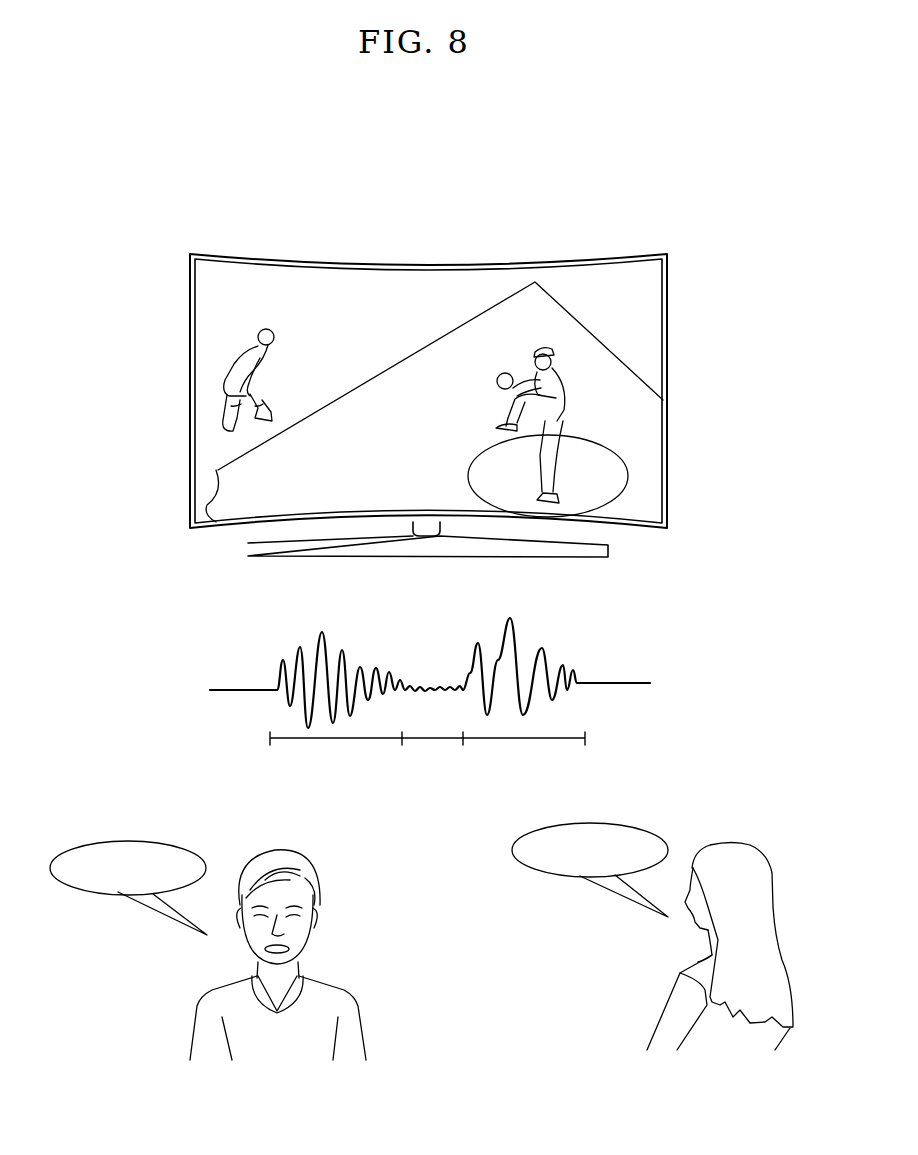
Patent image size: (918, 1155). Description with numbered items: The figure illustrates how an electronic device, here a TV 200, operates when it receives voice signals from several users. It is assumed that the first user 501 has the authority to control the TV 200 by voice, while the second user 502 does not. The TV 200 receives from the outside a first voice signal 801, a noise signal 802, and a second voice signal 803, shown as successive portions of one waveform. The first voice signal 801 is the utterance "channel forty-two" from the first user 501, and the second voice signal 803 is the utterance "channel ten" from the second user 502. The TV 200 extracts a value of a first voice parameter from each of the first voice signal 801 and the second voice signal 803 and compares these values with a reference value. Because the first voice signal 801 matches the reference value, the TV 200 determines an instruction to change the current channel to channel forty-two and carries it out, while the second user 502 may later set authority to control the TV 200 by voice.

The TV 200 is at (430, 261).
The first voice signal 801 is at (402, 742).
The noise signal 802 is at (463, 742).
The second voice signal 803 is at (585, 742).
The first user 501 is at (765, 903).
The second user 502 is at (333, 1000).